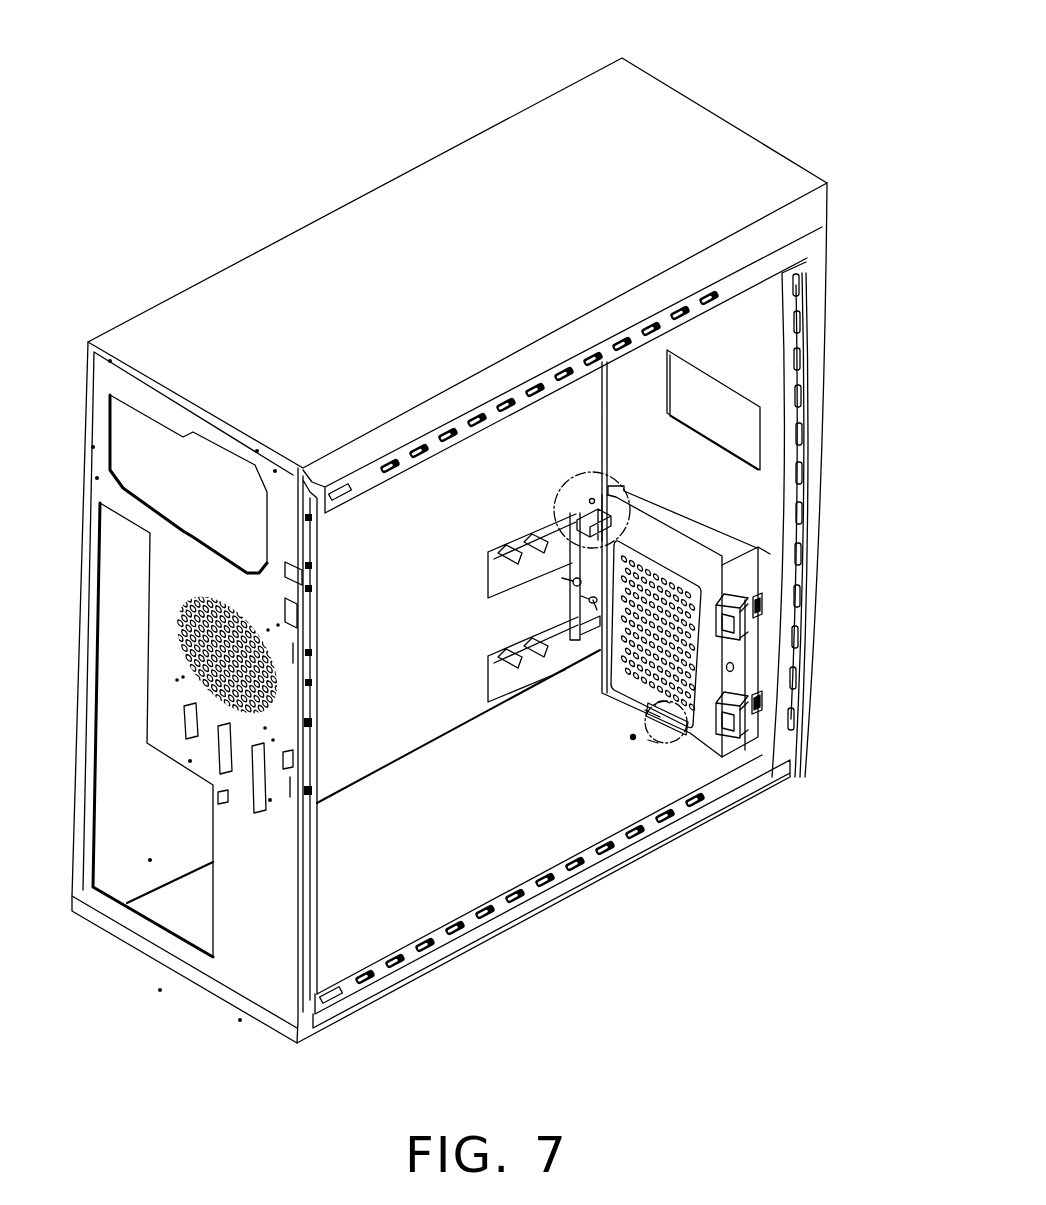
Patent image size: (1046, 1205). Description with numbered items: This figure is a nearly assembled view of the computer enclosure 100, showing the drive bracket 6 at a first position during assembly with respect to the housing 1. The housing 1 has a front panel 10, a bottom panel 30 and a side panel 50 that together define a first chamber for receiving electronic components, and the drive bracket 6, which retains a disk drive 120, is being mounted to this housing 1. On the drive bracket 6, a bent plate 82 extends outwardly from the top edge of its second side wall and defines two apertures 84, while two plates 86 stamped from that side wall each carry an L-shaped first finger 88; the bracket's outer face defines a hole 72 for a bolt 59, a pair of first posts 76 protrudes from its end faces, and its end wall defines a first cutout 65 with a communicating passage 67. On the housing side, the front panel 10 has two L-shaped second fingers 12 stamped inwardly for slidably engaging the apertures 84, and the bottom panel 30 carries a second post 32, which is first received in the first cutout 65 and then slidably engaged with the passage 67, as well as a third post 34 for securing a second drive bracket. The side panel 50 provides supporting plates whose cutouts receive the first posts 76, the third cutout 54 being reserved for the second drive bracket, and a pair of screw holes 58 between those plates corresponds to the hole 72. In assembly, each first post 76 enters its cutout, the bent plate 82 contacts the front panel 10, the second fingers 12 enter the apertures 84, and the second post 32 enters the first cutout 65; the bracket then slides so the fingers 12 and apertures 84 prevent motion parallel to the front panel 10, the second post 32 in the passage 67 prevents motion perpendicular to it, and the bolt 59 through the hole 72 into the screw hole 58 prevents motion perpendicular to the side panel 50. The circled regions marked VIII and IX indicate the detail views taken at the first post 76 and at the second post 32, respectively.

The housing 1 is at (498, 91).
The computer enclosure 100 is at (240, 33).
The front panel 10 is at (748, 353).
The bottom panel 30 is at (503, 838).
The side panel 50 is at (396, 507).
The drive bracket 6 is at (769, 534).
The disk drive 120 is at (700, 525).
The bent plate 82 is at (768, 572).
The apertures 84 is at (758, 600).
The plates 86 is at (746, 664).
The first finger 88 is at (740, 641).
The second fingers 12 is at (759, 608).
The third cutout 54 is at (532, 548).
The screw holes 58 is at (567, 583).
The hole 72 is at (573, 600).
The first posts 76 is at (582, 505).
The bolt 59 is at (571, 626).
The first cutout 65 is at (633, 707).
The second post 32 is at (652, 712).
The third post 34 is at (633, 744).
The passage 67 is at (650, 742).
The section view indicator VIII is at (597, 473).
The section view indicator IX is at (667, 742).